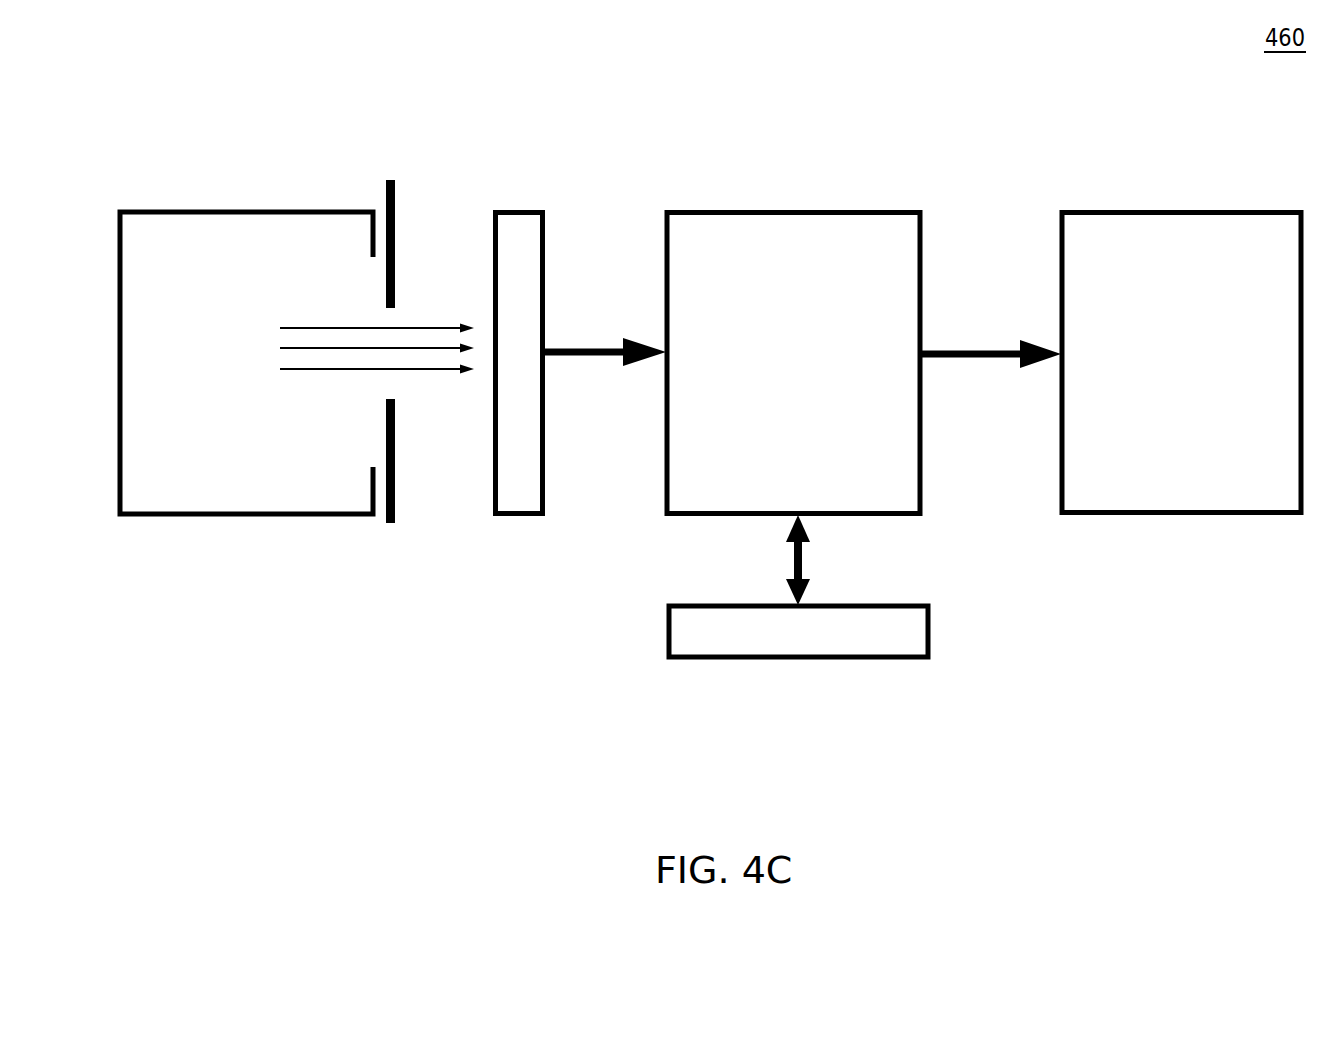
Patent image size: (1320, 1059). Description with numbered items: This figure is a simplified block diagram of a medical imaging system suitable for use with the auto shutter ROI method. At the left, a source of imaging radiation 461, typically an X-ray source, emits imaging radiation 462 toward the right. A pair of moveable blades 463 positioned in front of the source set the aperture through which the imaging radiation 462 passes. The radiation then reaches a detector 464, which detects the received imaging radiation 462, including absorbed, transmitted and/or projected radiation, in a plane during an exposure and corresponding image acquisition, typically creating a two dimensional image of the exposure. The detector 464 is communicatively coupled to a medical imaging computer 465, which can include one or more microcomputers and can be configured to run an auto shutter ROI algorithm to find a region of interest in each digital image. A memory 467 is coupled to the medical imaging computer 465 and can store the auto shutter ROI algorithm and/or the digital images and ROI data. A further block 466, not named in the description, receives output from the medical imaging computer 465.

The source of imaging radiation 461 is at (184, 200).
The imaging radiation 462 is at (283, 313).
The moveable blades 463 is at (408, 193).
The detector 464 is at (527, 182).
The medical imaging computer 465 is at (813, 192).
The output device 466 is at (1187, 198).
The memory 467 is at (758, 670).